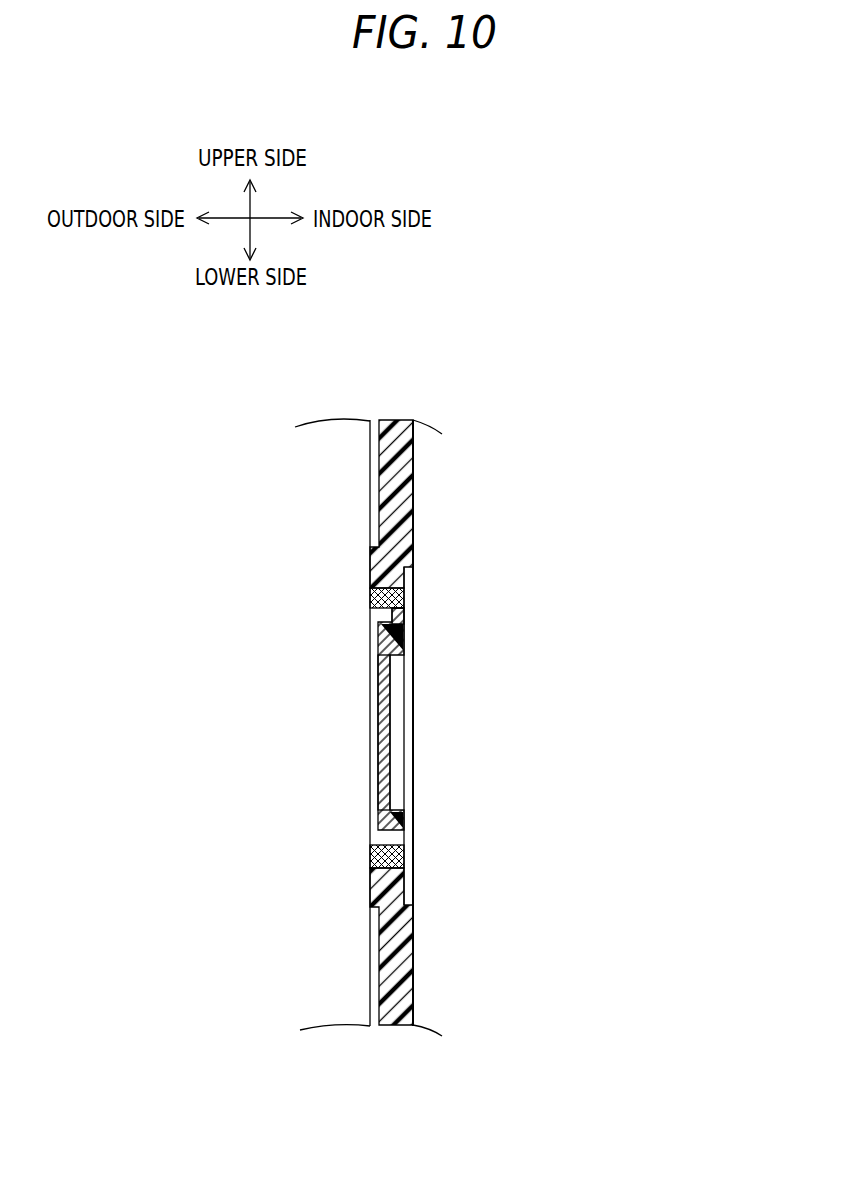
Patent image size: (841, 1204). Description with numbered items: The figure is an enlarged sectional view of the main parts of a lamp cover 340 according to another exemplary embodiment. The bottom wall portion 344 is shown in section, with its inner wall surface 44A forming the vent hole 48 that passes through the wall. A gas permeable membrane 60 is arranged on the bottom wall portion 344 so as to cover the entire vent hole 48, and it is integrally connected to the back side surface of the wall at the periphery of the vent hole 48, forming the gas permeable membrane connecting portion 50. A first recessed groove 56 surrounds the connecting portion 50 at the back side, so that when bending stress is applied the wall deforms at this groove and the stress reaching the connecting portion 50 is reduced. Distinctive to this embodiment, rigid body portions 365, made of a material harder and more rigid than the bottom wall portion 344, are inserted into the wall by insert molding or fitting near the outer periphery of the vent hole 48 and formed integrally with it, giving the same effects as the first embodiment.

The lamp cover 340 is at (425, 704).
The bottom wall portion 344 is at (410, 630).
The rigid body portion 365 is at (370, 600).
The gas permeable membrane connecting portion 50 is at (378, 650).
The inner wall surface 44A is at (406, 634).
The vent hole 48 is at (391, 730).
The gas permeable membrane 60 is at (391, 778).
The first recessed groove 56 is at (318, 812).